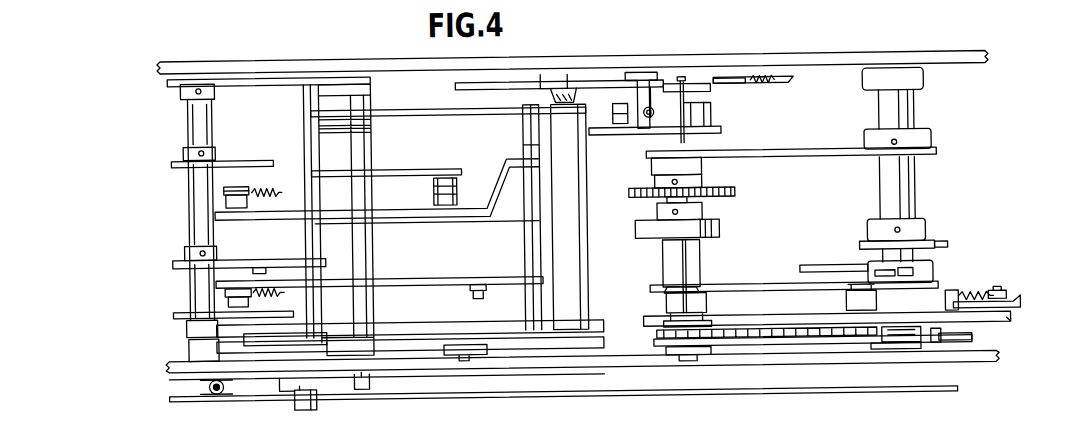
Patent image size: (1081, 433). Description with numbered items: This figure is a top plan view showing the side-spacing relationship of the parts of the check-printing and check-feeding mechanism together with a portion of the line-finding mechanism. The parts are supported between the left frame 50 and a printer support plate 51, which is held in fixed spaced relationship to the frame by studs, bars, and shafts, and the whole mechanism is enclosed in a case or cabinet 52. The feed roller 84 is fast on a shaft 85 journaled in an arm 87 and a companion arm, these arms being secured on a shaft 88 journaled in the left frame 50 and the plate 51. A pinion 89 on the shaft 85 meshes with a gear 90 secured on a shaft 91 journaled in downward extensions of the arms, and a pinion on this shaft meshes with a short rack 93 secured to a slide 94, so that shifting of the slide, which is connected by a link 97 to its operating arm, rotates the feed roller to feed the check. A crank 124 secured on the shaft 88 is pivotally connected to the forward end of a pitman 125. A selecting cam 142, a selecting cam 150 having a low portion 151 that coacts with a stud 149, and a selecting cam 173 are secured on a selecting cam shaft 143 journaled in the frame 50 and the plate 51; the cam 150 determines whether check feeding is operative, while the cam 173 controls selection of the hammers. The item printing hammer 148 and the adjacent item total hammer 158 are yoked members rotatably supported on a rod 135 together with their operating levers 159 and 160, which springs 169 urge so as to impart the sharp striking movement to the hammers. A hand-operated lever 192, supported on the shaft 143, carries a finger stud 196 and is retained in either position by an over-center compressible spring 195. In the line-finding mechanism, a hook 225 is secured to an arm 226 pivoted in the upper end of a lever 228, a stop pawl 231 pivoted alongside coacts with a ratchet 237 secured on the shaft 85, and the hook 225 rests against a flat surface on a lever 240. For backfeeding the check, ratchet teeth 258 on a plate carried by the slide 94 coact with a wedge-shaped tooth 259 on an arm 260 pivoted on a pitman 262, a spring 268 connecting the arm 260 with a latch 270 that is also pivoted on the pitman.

The left frame 50 is at (819, 61).
The printer support plate 51 is at (597, 368).
The case or cabinet 52 is at (477, 399).
The feed roller 84 is at (717, 231).
The shaft 85 is at (710, 150).
The arm 87 is at (765, 293).
The shaft 88 is at (900, 207).
The pinion 89 is at (650, 191).
The gear 90 is at (627, 198).
The shaft 91 is at (698, 265).
The short rack 93 is at (520, 342).
The slide 94 is at (782, 350).
The link 97 is at (455, 342).
The crank 124 is at (933, 255).
The pitman 125 is at (825, 273).
The rod 135 is at (347, 89).
The selecting cam 142 is at (293, 266).
The selecting cam shaft 143 is at (197, 206).
The item printing hammer 148 is at (573, 278).
The stud 149 is at (357, 381).
The selecting cam 150 is at (293, 332).
The low portion 151 is at (550, 82).
The item total hammer 158 is at (572, 205).
The operating lever 159 is at (455, 285).
The operating lever 160 is at (420, 219).
The springs 169 is at (280, 191).
The selecting cam 173 is at (247, 159).
The hand-operated lever 192 is at (252, 378).
The compressible spring 195 is at (212, 397).
The finger stud 196 is at (304, 414).
The hook 225 is at (626, 131).
The arm 226 is at (650, 79).
The lever 228 is at (760, 85).
The stop pawl 231 is at (717, 92).
The ratchet 237 is at (695, 86).
The lever 240 is at (495, 83).
The ratchet teeth 258 is at (838, 343).
The wedge-shaped tooth 259 is at (937, 350).
The arm 260 is at (1003, 334).
The pitman 262 is at (772, 321).
The spring 268 is at (980, 299).
The latch 270 is at (1017, 313).